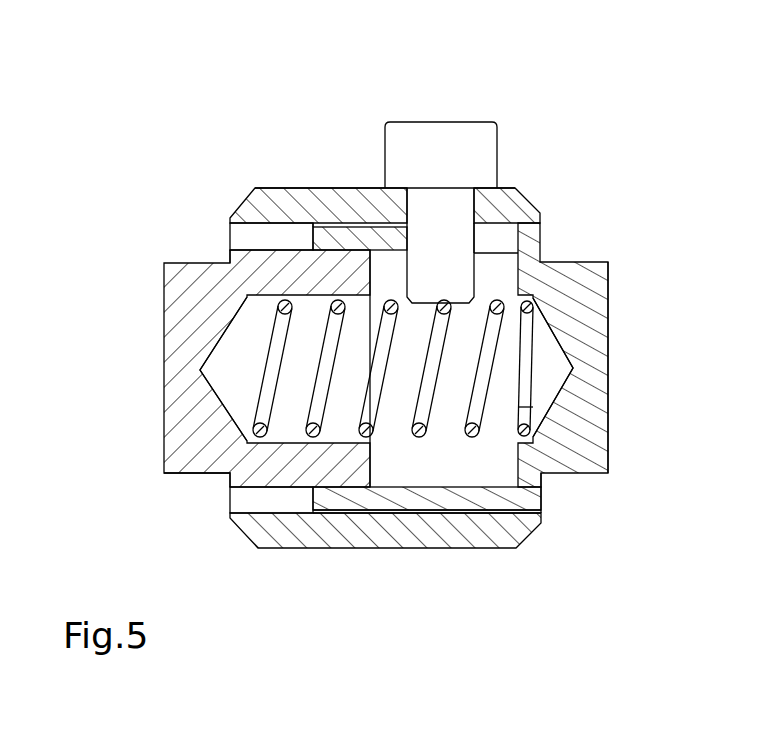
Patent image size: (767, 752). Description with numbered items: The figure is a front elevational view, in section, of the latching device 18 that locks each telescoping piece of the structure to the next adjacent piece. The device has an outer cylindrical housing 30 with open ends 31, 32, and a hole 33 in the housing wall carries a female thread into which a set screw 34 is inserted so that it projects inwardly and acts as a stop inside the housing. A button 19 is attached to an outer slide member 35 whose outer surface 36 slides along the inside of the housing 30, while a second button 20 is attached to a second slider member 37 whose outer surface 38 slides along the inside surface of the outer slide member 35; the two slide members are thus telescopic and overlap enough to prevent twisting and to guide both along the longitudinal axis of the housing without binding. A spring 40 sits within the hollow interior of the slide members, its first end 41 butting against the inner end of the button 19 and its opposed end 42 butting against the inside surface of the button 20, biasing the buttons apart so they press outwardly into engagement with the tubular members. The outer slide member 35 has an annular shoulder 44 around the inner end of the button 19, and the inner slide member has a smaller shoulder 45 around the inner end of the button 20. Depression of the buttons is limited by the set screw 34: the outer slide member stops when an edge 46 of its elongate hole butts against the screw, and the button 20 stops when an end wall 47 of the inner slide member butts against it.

The latching device 18 is at (540, 182).
The button 19 is at (583, 254).
The button 20 is at (185, 255).
The outer cylindrical housing 30 is at (292, 177).
The open end 31 is at (546, 520).
The open end 32 is at (228, 514).
The hole 33 is at (545, 209).
The set screw 34 is at (435, 185).
The outer slide member 35 is at (448, 505).
The outer surface 36 is at (378, 510).
The second slider member 37 is at (228, 481).
The outer surface 38 is at (350, 247).
The spring 40 is at (473, 435).
The first end of the spring 41 is at (535, 302).
The opposed end of the spring 42 is at (262, 387).
The annular shoulder 44 is at (543, 482).
The shoulder 45 is at (232, 263).
The edge of the hole 46 is at (608, 280).
The end wall 47 is at (384, 262).